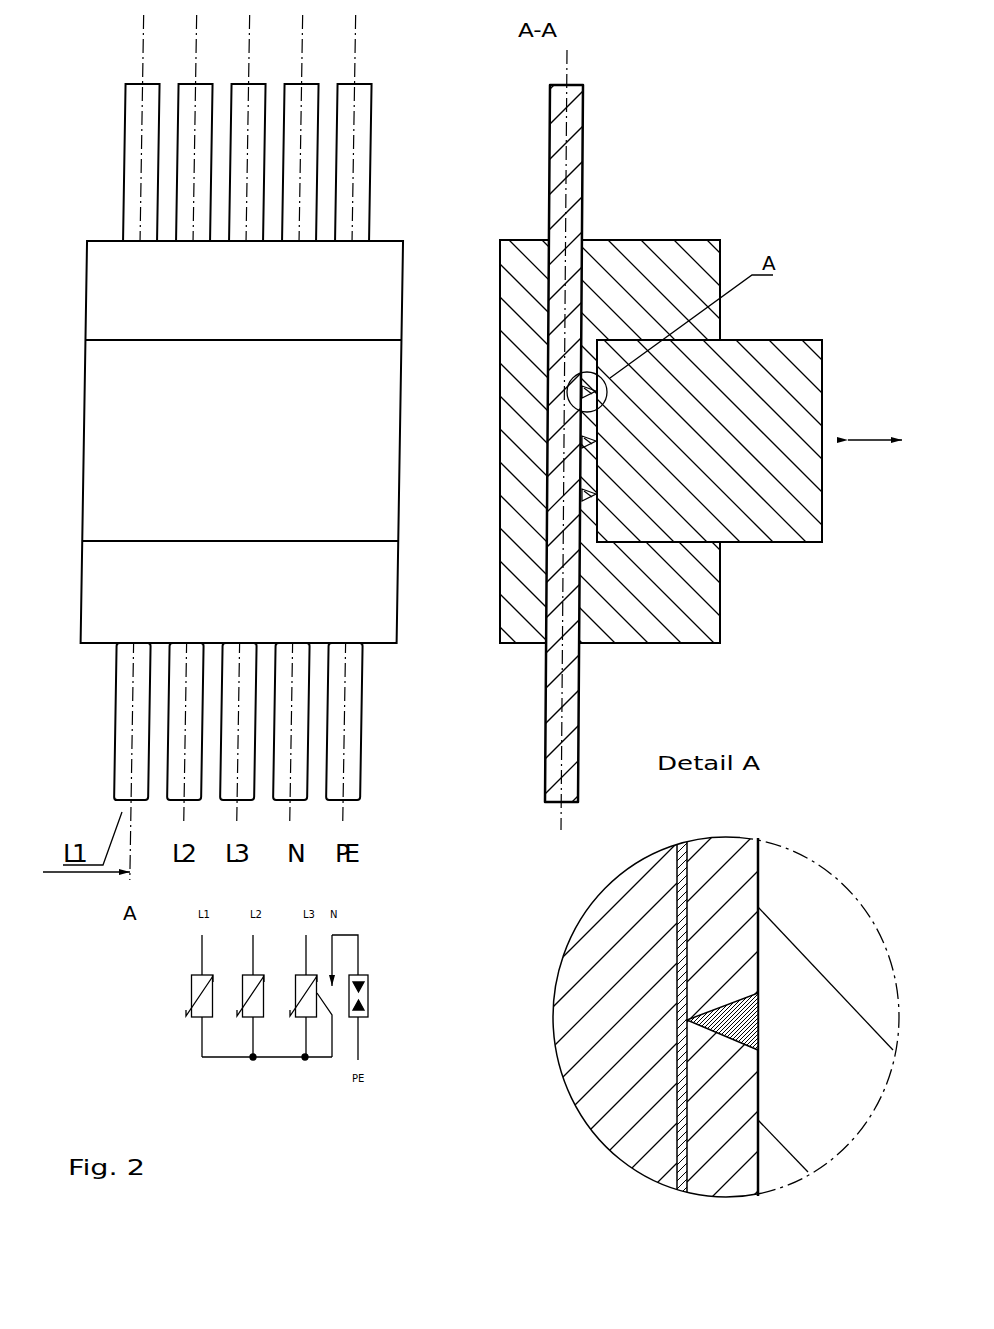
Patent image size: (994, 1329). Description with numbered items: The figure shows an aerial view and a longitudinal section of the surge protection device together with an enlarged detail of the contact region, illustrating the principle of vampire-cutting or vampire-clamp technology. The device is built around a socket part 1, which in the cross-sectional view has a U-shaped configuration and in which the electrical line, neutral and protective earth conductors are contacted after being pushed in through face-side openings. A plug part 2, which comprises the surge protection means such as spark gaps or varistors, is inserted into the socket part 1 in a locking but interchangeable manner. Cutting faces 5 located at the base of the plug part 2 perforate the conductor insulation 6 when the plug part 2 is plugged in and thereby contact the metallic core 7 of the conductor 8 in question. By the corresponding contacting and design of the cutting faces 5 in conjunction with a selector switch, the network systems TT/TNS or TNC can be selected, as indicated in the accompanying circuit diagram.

The socket part 1 is at (499, 302).
The plug part 2 is at (803, 872).
The cutting faces 5 is at (623, 987).
The conductor insulation 6 is at (673, 1003).
The metallic core 7 is at (623, 1063).
The conductor 8 is at (548, 710).